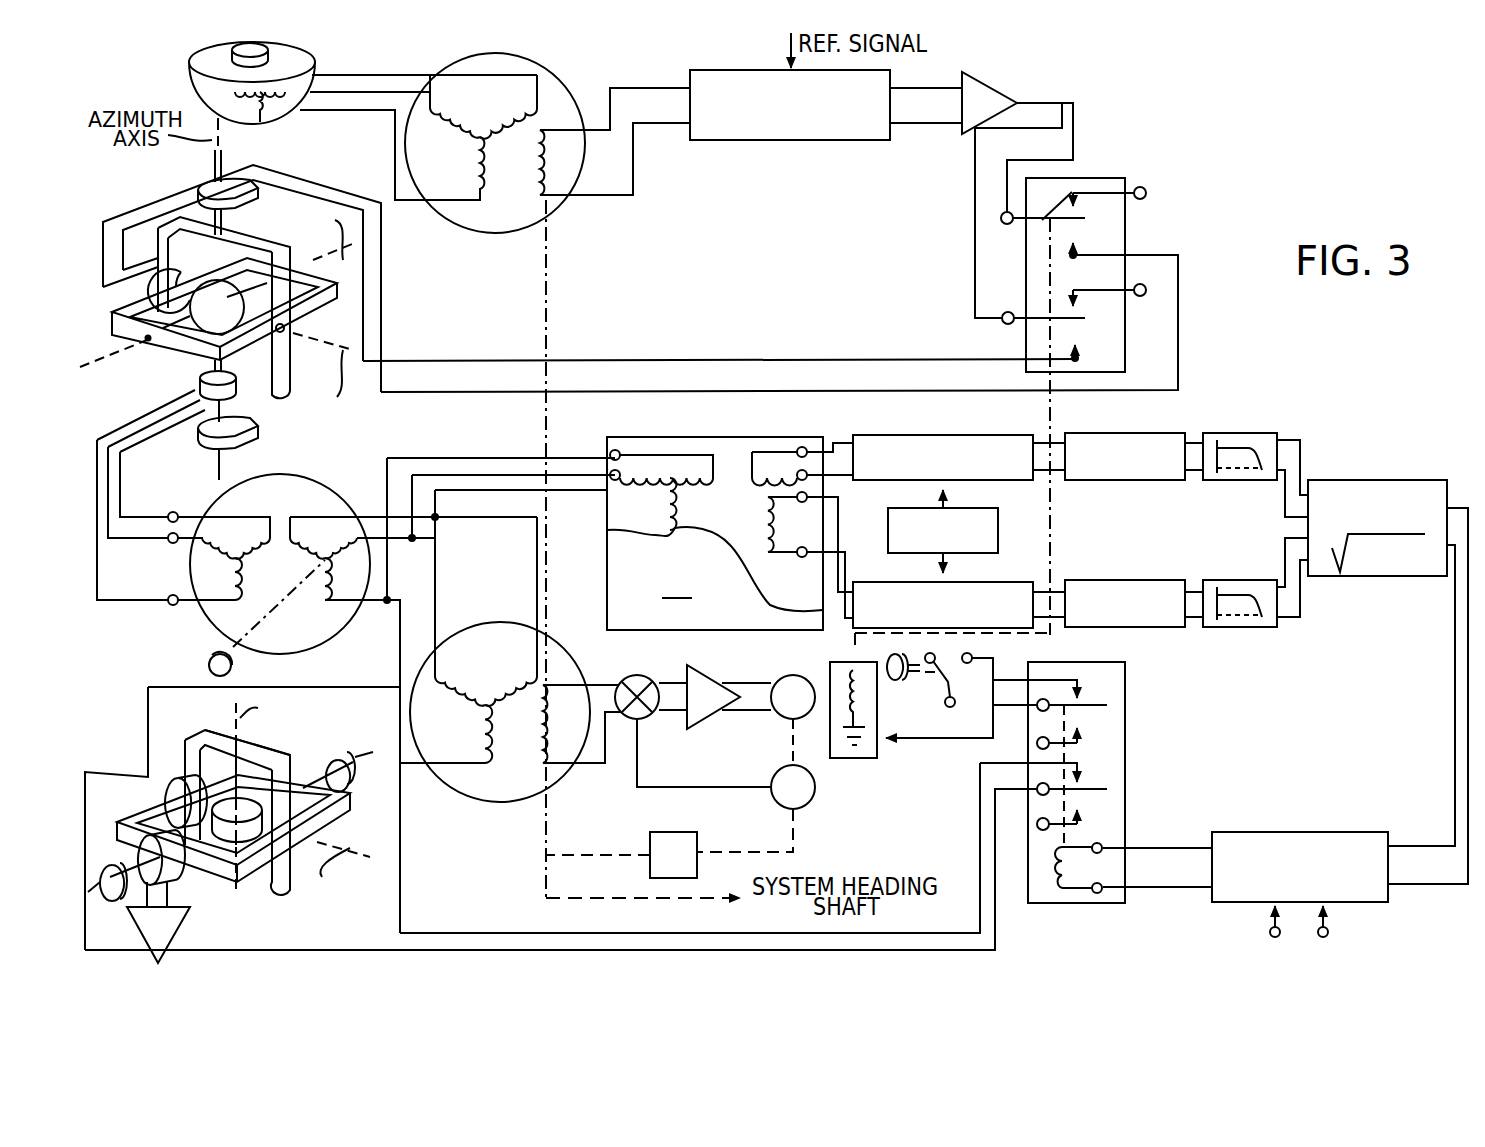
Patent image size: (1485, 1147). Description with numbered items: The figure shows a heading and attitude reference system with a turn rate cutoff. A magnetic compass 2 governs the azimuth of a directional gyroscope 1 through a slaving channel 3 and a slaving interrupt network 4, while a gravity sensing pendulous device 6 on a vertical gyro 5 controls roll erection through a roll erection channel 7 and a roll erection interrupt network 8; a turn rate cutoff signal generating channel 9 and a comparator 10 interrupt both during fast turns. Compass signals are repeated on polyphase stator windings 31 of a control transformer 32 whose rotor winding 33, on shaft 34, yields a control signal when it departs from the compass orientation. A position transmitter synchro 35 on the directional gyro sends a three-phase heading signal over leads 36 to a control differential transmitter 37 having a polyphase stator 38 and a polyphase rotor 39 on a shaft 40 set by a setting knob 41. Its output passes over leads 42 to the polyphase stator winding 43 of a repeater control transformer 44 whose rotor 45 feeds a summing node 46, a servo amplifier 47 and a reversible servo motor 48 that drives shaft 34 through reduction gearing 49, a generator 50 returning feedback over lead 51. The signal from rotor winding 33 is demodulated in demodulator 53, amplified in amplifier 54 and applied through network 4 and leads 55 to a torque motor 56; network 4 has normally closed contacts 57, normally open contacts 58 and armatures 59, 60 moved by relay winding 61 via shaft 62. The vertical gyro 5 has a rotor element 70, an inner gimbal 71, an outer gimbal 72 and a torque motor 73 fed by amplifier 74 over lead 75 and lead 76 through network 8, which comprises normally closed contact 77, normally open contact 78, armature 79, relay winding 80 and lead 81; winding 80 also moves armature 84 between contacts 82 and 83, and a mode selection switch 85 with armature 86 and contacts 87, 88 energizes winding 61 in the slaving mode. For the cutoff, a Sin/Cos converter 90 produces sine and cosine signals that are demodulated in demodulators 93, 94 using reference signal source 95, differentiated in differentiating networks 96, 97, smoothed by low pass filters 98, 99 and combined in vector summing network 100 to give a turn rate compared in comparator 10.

The directional gyroscope 1 is at (150, 392).
The magnetic compass 2 is at (142, 65).
The slaving channel 3 is at (816, 191).
The slaving interrupt network 4 is at (1198, 227).
The vertical gyro 5 is at (105, 700).
The gravity sensing pendulous device 6 is at (152, 845).
The roll erection channel 7 is at (1032, 960).
The roll erection interrupt network 8 is at (1222, 702).
The turn rate cutoff signal generating channel 9 is at (1102, 545).
The comparator 10 is at (1290, 817).
The polyphase stator windings 31 is at (481, 137).
The control transformer 32 is at (563, 80).
The rotor winding 33 is at (543, 173).
The shaft 34 is at (560, 270).
The position transmitter synchro 35 is at (245, 400).
The leads 36 is at (160, 543).
The control differential transmitter 37 is at (355, 490).
The polyphase stator 38 is at (262, 568).
The polyphase rotor 39 is at (306, 532).
The shaft 40 is at (282, 608).
The setting knob 41 is at (210, 667).
The leads 42 is at (386, 592).
The polyphase stator winding 43 is at (462, 673).
The repeater control transformer 44 is at (500, 806).
The rotor winding 45 is at (543, 745).
The summing node 46 is at (637, 673).
The servo amplifier 47 is at (707, 713).
The reversible servo motor 48 is at (797, 672).
The reduction gearing 49 is at (678, 830).
The generator 50 is at (808, 805).
The lead 51 is at (653, 787).
The demodulator 53 is at (723, 142).
The amplifier 54 is at (985, 80).
The leads 55 is at (832, 391).
The torque motor 56 is at (180, 273).
The normally closed contacts 57 is at (1080, 212).
The normally open contacts 58 is at (1068, 250).
The relay armature 59 is at (1049, 199).
The relay armature 60 is at (1058, 316).
The relay winding 61 is at (845, 717).
The shaft 62 is at (1054, 428).
The spinning rotor element 70 is at (222, 800).
The inner gimbal 71 is at (277, 753).
The outer gimbal 72 is at (350, 817).
The torque motor 73 is at (180, 728).
The amplifier 74 is at (193, 925).
The lead 75 is at (127, 940).
The lead 76 is at (350, 953).
The normally closed contact 77 is at (1087, 780).
The normally open contact 78 is at (1088, 808).
The relay armature 79 is at (1102, 791).
The relay winding 80 is at (1065, 869).
The lead 81 is at (980, 844).
The normally closed contact 82 is at (1090, 690).
The normally open contact 83 is at (1084, 728).
The armature 84 is at (1098, 704).
The mode selection switch 85 is at (896, 680).
The manually actuated armature 86 is at (973, 655).
The first contact 87 is at (927, 655).
The contact 88 is at (953, 692).
The Sin/Cos converter 90 is at (732, 434).
The demodulator 93 is at (1000, 582).
The demodulator 94 is at (955, 435).
The reference signal source 95 is at (888, 522).
The differentiating network 96 is at (1160, 481).
The differentiating network 97 is at (1142, 580).
The low pass filter 98 is at (1255, 433).
The low pass filter 99 is at (1225, 580).
The vector summing network 100 is at (1400, 480).